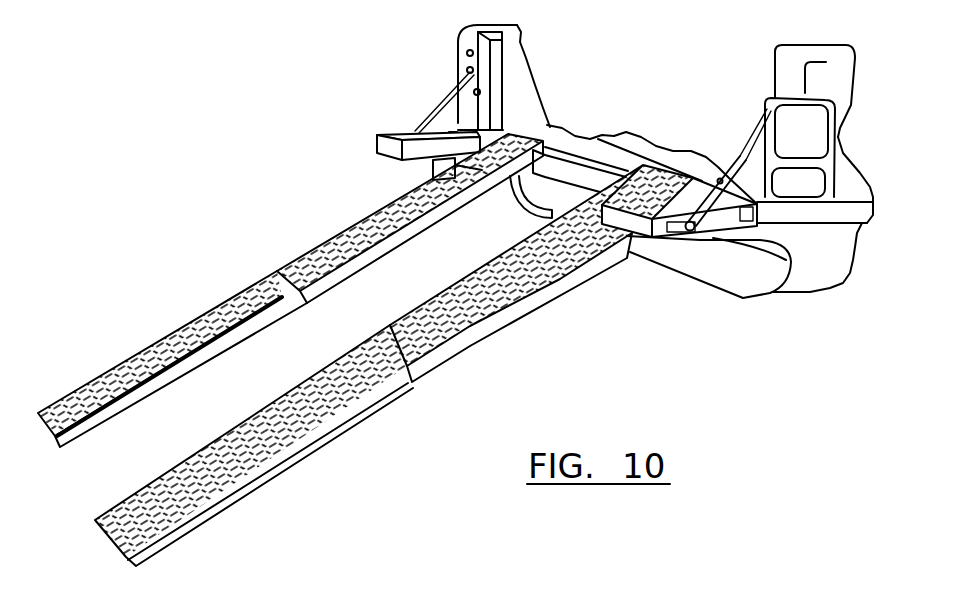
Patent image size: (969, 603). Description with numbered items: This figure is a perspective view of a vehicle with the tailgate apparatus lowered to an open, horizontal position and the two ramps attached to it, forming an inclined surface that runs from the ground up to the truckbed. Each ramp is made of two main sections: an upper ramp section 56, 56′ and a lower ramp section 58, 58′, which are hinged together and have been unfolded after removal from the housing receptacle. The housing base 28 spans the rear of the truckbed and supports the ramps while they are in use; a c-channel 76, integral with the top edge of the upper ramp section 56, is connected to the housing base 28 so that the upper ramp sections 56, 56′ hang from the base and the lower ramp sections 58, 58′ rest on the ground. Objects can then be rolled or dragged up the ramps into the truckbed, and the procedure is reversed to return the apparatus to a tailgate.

The housing base 28 is at (587, 150).
The upper ramp section 56 is at (317, 258).
The upper ramp section 56′ is at (435, 340).
The lower ramp section 58 is at (148, 347).
The lower ramp section 58′ is at (232, 472).
The c-channel 76 is at (683, 183).